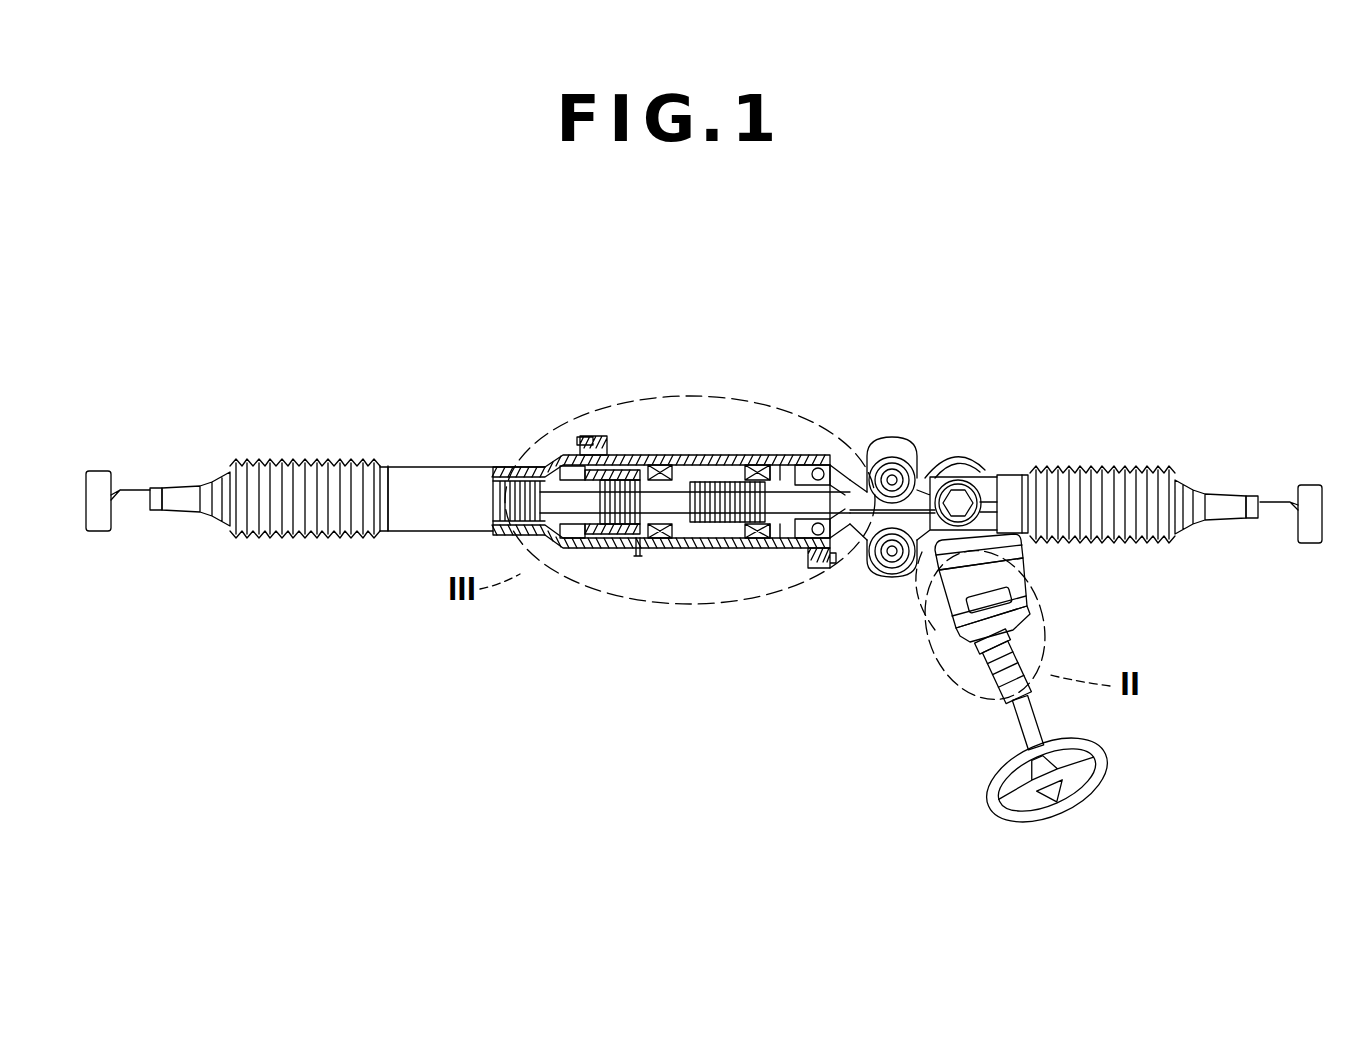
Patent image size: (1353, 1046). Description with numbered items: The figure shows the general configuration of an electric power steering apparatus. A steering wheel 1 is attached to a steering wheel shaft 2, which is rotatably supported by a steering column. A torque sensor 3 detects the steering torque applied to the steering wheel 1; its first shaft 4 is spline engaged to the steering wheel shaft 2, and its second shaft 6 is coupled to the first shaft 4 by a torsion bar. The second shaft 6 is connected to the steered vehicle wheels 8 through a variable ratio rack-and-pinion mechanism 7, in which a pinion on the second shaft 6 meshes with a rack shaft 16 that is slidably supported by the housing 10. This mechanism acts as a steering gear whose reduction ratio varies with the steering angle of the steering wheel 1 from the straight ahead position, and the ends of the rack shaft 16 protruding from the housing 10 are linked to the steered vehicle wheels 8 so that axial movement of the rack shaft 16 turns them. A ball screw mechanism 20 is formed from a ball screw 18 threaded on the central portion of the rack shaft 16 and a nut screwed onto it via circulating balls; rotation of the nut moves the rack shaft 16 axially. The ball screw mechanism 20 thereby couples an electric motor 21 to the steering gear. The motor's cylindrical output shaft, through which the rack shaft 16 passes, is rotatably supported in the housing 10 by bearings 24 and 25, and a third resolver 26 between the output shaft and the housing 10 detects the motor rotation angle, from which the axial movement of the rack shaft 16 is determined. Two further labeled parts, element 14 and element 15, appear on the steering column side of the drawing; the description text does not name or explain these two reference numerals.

The steering wheel 1 is at (1096, 760).
The steering wheel shaft 2 is at (1012, 724).
The torque sensor 3 is at (953, 612).
The first shaft 4 is at (968, 660).
The second shaft 6 is at (935, 585).
The variable ratio rack-and-pinion mechanism 7 is at (972, 476).
The steered vehicle wheels 8 is at (96, 533).
The housing 10 is at (850, 455).
The electric motor 14 is at (1028, 614).
The reduction gear 15 is at (1024, 580).
The rack shaft 16 is at (500, 467).
The ball screw 18 is at (620, 553).
The ball screw mechanism 20 is at (585, 550).
The electric motor 21 is at (695, 572).
The bearing 24 is at (620, 452).
The bearing 25 is at (795, 560).
The third resolver 26 is at (775, 455).